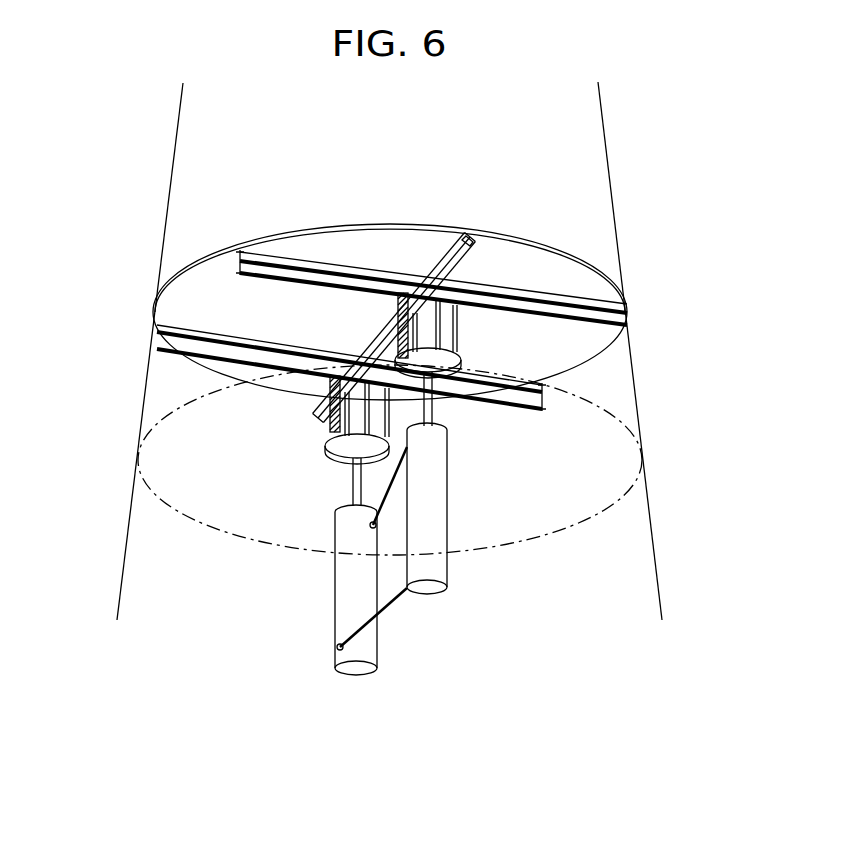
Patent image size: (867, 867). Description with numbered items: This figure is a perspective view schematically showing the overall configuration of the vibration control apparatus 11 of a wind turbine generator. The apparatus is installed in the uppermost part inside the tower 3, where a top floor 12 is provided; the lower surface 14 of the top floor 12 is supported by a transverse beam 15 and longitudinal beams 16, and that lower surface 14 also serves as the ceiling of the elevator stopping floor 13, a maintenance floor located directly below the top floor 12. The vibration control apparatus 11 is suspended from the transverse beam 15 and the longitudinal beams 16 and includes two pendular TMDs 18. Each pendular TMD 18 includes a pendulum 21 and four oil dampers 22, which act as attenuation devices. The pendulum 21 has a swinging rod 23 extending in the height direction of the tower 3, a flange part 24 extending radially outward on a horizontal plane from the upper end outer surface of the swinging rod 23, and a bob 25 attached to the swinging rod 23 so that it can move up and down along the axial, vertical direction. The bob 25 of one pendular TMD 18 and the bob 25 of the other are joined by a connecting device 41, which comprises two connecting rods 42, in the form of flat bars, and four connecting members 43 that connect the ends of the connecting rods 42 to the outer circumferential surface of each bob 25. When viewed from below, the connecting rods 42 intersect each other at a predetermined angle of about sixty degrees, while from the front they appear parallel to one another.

The tower 3 is at (608, 167).
The vibration control apparatus 11 is at (341, 520).
The top floor 12 is at (366, 228).
The elevator stopping floor 13 is at (585, 522).
The lower surface 14 is at (598, 352).
The transverse beam 15 is at (475, 242).
The longitudinal beams 16 is at (240, 262).
The pendular TMD 18 is at (379, 511).
The pendulum 21 is at (401, 579).
The oil dampers 22 is at (460, 326).
The swinging rod 23 is at (430, 402).
The flange part 24 is at (450, 366).
The bob 25 is at (418, 522).
The connecting device 41 is at (346, 581).
The connecting rods 42 is at (393, 478).
The connecting members 43 is at (367, 527).